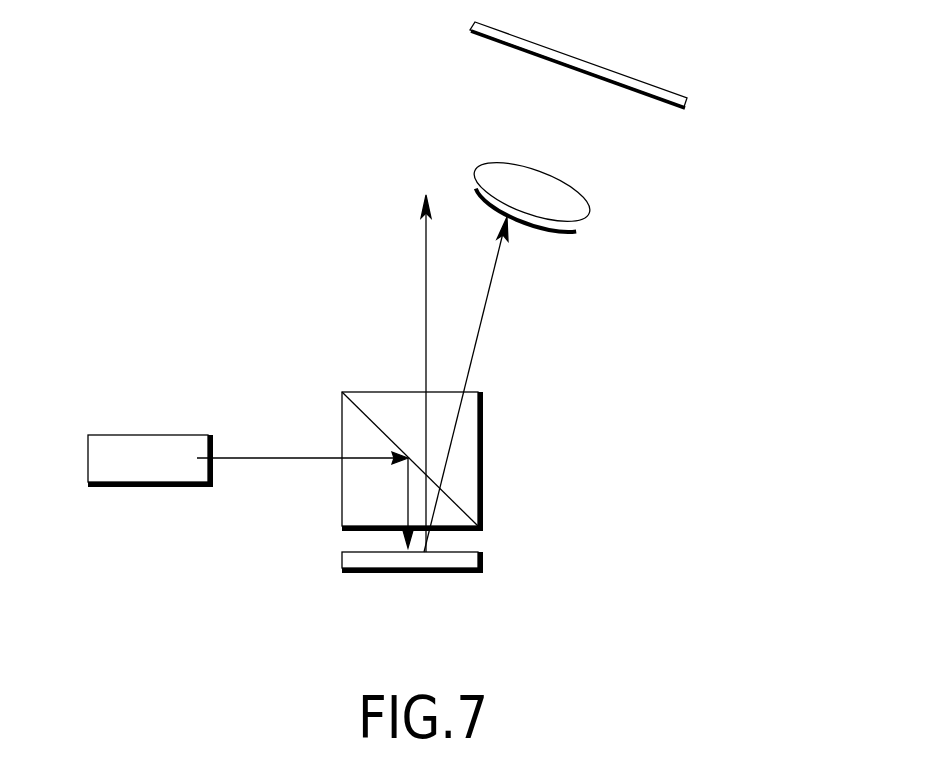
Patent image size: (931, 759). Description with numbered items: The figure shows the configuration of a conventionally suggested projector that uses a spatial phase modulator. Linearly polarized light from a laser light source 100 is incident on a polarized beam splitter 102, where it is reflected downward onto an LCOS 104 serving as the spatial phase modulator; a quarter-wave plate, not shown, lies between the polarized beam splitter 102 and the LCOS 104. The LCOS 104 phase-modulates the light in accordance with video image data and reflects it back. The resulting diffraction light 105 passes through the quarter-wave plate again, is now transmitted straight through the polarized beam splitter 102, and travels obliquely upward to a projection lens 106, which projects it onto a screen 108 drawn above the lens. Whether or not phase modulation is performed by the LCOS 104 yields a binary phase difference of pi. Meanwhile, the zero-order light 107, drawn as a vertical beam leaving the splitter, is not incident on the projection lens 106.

The light source 100 is at (158, 487).
The polarized beam splitter 102 is at (480, 468).
The LCOS 104 is at (415, 575).
The diffraction light 105 is at (484, 310).
The projection lens 106 is at (590, 210).
The zero-order light 107 is at (425, 312).
The screen 108 is at (688, 104).